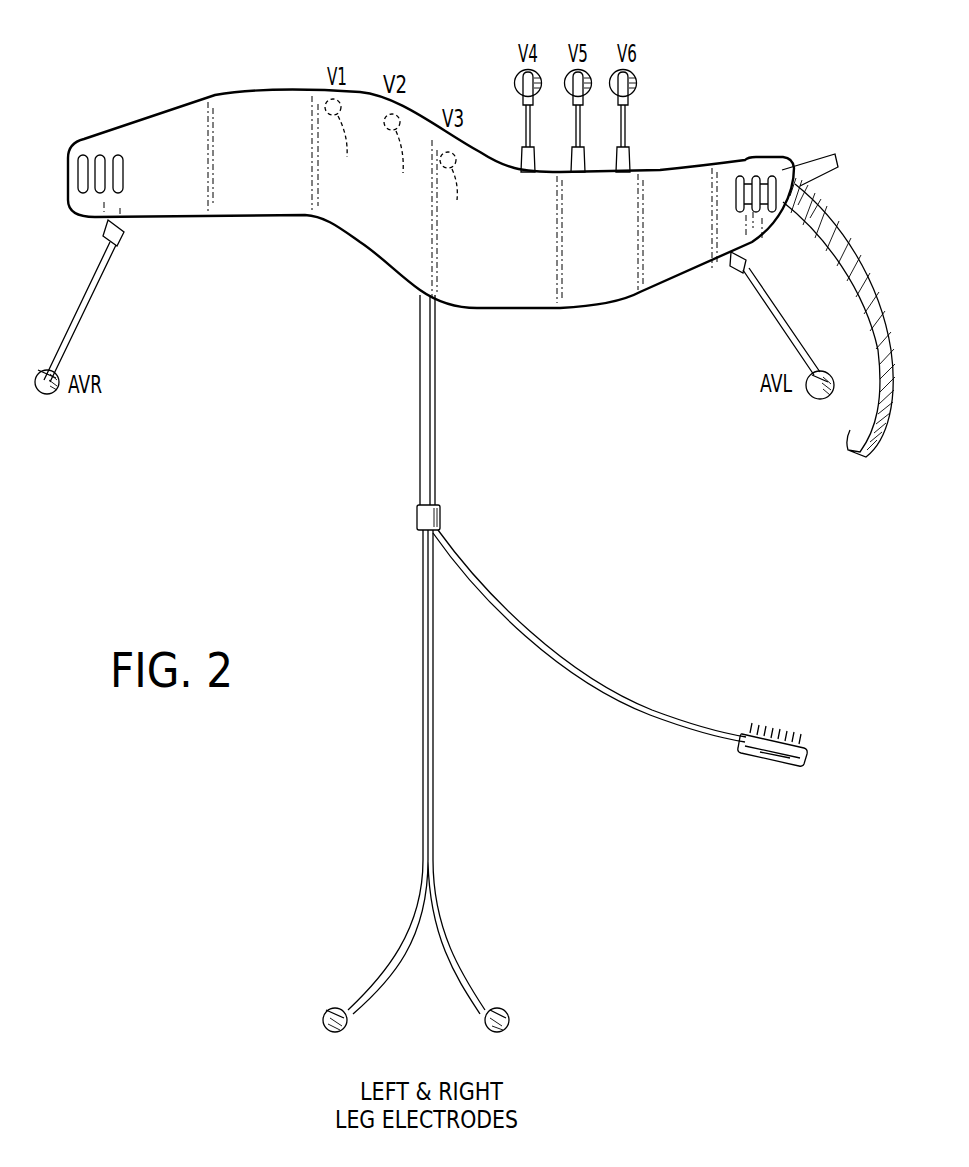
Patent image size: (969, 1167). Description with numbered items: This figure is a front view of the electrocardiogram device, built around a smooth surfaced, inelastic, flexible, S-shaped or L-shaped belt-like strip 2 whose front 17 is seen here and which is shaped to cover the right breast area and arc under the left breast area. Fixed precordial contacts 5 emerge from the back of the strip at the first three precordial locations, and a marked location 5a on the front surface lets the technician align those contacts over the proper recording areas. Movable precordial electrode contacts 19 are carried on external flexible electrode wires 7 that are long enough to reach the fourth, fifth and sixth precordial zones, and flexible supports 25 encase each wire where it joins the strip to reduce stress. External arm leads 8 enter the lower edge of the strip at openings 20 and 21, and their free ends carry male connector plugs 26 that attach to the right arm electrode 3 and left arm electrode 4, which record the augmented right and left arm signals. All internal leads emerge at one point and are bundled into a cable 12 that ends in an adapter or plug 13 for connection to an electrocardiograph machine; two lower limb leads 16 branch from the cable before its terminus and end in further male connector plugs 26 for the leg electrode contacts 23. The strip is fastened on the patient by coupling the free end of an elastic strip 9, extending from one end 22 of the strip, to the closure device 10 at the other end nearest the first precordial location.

The belt-like strip 2 is at (617, 287).
The right arm electrode cuff 3 is at (57, 398).
The left arm electrode cuff 4 is at (822, 398).
The fixed precordial contacts 5 is at (395, 166).
The marked location 5a is at (322, 92).
The external flexible electrode wires 7 is at (523, 118).
The external arm leads 8 is at (88, 303).
The elastic strip 9 is at (878, 437).
The closure device 10 is at (100, 155).
The cable 12 is at (595, 683).
The adapter or plug 13 is at (745, 733).
The lower limb leads 16 is at (425, 710).
The front 17 is at (252, 160).
The movable precordial electrode contacts 19 is at (535, 72).
The opening 20 is at (125, 232).
The opening 21 is at (733, 270).
The end of the belt-like strip 22 is at (741, 174).
The leg electrode contacts 23 is at (320, 1015).
The flexible supports 25 is at (522, 162).
The male connector plugs 26 is at (48, 372).